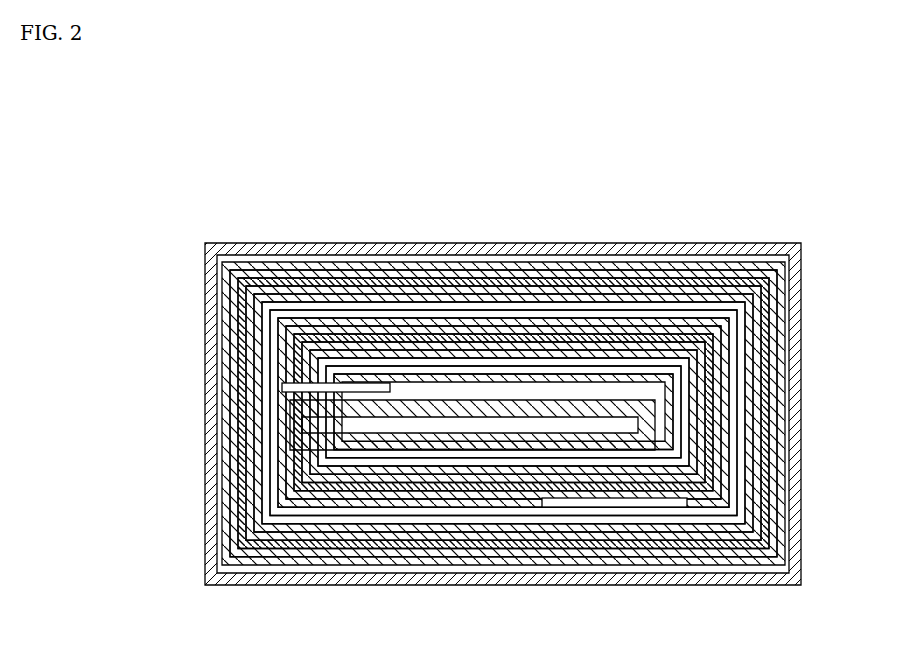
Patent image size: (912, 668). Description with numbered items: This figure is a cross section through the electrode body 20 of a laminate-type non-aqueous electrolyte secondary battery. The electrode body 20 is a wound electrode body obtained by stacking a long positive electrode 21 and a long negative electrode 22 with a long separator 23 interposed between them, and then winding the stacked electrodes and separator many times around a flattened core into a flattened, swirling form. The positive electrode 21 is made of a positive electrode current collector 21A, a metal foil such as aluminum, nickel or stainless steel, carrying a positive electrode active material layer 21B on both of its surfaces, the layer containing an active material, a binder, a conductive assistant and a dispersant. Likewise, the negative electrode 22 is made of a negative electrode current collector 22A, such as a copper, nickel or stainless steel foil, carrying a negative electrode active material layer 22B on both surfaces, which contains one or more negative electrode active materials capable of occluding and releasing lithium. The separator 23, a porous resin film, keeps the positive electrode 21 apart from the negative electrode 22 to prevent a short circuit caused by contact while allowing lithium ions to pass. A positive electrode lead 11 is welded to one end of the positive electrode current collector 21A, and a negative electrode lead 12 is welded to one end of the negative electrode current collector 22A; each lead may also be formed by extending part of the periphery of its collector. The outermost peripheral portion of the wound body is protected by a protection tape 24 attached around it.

The electrode body 20 is at (714, 128).
The positive electrode 21 is at (248, 183).
The positive electrode current collector 21A is at (299, 283).
The positive electrode active material layer 21B is at (362, 302).
The negative electrode 22 is at (408, 183).
The negative electrode current collector 22A is at (425, 350).
The negative electrode active material layer 22B is at (520, 362).
The separator 23 is at (627, 312).
The protection tape 24 is at (781, 246).
The positive electrode lead 11 is at (347, 392).
The negative electrode lead 12 is at (607, 507).